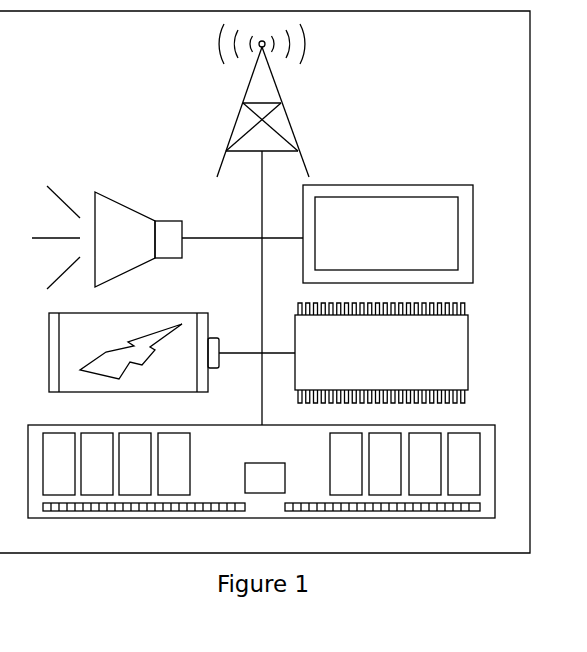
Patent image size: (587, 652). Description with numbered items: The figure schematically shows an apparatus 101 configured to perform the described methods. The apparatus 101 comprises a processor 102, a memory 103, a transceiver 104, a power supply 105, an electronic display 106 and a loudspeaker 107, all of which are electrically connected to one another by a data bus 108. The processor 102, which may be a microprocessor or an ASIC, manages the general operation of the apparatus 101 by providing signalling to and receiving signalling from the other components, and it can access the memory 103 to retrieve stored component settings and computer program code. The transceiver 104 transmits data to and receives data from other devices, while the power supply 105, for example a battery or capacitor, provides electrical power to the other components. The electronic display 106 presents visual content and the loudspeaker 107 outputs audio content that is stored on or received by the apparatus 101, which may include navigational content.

The apparatus 101 is at (265, 282).
The processor 102 is at (381, 353).
The memory 103 is at (261, 471).
The transceiver 104 is at (240, 117).
The power supply 105 is at (134, 352).
The electronic display 106 is at (388, 234).
The loudspeaker 107 is at (107, 237).
The data bus 108 is at (259, 191).